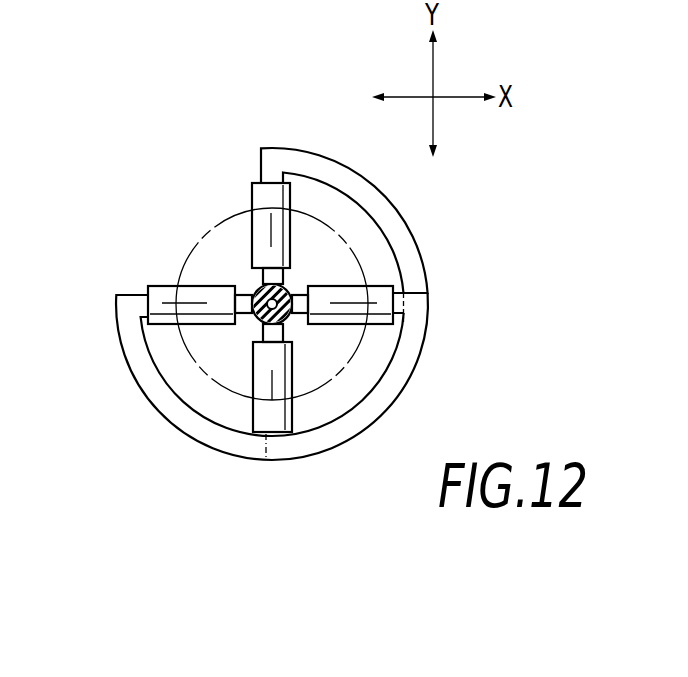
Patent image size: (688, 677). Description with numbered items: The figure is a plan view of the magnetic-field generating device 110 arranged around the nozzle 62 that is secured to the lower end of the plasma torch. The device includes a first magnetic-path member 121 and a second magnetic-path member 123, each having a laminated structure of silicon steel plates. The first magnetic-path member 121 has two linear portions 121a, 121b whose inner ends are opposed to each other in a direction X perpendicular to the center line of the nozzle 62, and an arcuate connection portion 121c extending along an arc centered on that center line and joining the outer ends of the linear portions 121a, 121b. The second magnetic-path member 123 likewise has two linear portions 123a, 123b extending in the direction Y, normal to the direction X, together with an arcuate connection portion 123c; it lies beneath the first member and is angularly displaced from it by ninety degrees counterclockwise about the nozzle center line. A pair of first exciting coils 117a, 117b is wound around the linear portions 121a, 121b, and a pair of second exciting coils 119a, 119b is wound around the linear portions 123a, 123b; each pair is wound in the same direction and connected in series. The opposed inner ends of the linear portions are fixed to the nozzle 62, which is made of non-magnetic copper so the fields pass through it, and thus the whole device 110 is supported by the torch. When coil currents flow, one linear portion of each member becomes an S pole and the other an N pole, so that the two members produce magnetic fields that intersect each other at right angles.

The magnetic-field generating device 110 is at (130, 152).
The nozzle 62 is at (284, 289).
The first exciting coil 117a is at (158, 286).
The first exciting coil 117b is at (380, 286).
The second exciting coil 119a is at (292, 389).
The second exciting coil 119b is at (252, 205).
The first magnetic-path member 121 is at (340, 437).
The linear portion 121a is at (263, 327).
The linear portion 121b is at (300, 330).
The arcuate connection portion 121c is at (203, 438).
The second magnetic-path member 123 is at (356, 181).
The linear portion 123a is at (258, 333).
The linear portion 123b is at (262, 284).
The arcuate connection portion 123c is at (398, 213).